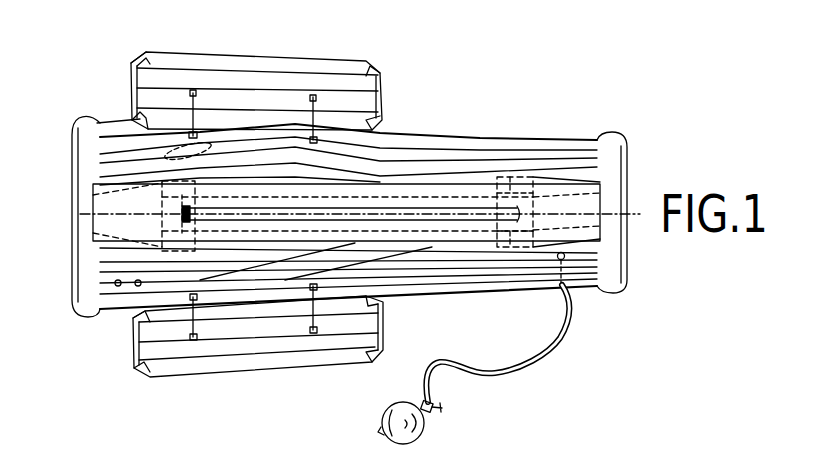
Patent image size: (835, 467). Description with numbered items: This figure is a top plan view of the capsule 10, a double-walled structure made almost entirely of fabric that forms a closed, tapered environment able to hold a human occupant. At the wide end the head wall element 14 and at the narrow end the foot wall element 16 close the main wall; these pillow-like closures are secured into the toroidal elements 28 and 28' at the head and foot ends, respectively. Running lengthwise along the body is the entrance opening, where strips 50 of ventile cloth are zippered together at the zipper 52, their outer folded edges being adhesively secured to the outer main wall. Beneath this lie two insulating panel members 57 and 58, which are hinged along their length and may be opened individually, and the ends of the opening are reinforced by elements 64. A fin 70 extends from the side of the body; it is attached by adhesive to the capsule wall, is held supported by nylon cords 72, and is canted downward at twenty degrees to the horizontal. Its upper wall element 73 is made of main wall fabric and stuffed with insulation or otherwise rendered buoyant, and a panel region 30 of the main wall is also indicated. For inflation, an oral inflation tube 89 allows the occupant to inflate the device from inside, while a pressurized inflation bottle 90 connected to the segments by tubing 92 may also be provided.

The capsule 10 is at (585, 125).
The head wall element 14 is at (80, 213).
The foot wall element 16 is at (612, 241).
The toroidal element 28 is at (63, 185).
The toroidal element 28' is at (663, 196).
The body panel 30 is at (493, 165).
The strips of ventile cloth 50 is at (418, 188).
The zipper 52 is at (422, 212).
The insulating panel member 57 is at (247, 209).
The insulating panel member 58 is at (334, 210).
The opening reinforcement element 64 is at (148, 201).
The fin 70 is at (267, 363).
The nylon cord 72 is at (315, 114).
The upper wall element 73 is at (266, 80).
The oral inflation tube 89 is at (172, 155).
The inflation bottle 90 is at (417, 437).
The tubing 92 is at (517, 372).